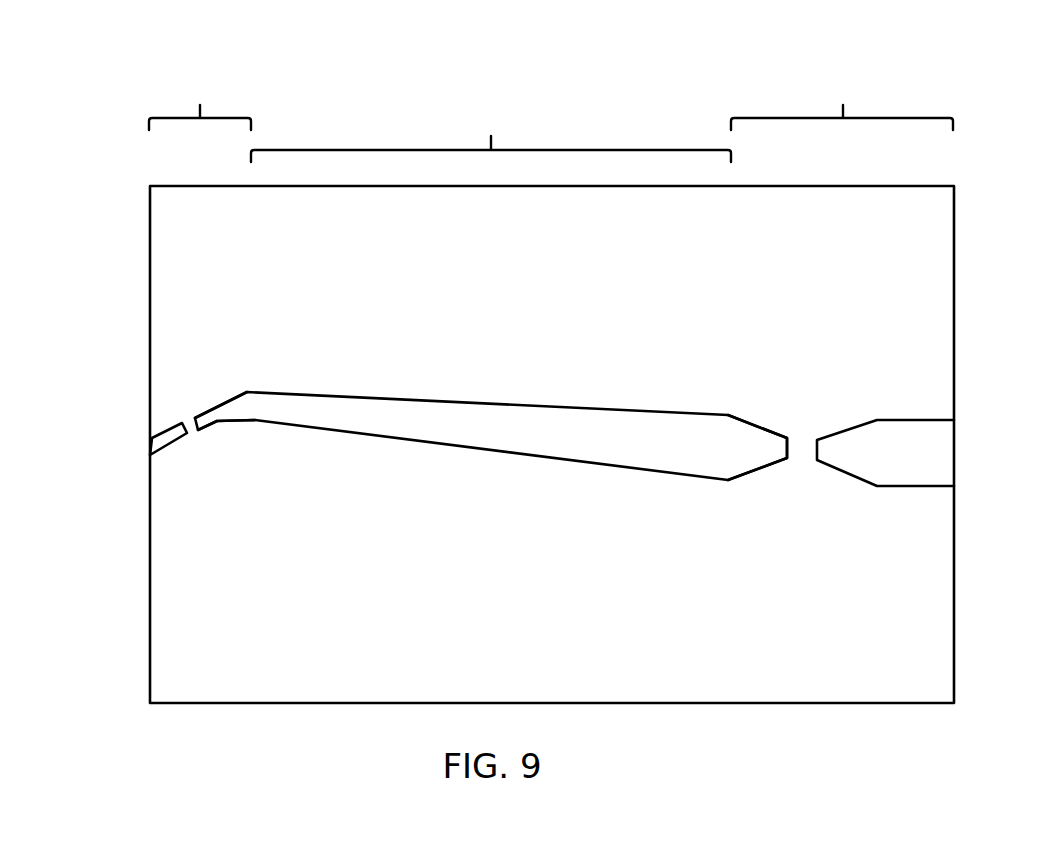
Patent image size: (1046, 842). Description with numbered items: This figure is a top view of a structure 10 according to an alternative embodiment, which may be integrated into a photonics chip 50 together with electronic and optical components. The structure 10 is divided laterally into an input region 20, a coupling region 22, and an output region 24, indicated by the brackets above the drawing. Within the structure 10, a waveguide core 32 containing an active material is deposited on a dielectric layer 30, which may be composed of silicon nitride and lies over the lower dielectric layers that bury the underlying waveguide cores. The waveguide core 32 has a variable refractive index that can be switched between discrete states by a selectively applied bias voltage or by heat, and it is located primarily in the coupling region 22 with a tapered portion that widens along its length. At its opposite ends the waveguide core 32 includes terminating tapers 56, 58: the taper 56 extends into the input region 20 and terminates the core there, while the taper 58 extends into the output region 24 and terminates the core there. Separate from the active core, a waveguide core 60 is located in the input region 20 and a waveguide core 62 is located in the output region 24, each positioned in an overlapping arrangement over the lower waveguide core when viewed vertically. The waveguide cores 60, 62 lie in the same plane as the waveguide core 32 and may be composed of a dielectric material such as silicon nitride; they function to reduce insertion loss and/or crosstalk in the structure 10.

The structure 10 is at (760, 248).
The input region 20 is at (200, 97).
The coupling region 22 is at (491, 128).
The output region 24 is at (842, 97).
The dielectric layer 30 is at (163, 538).
The waveguide core 32 is at (475, 427).
The photonics chip 50 is at (128, 170).
The taper 56 is at (212, 413).
The taper 58 is at (752, 448).
The waveguide core 60 is at (165, 442).
The waveguide core 62 is at (854, 447).